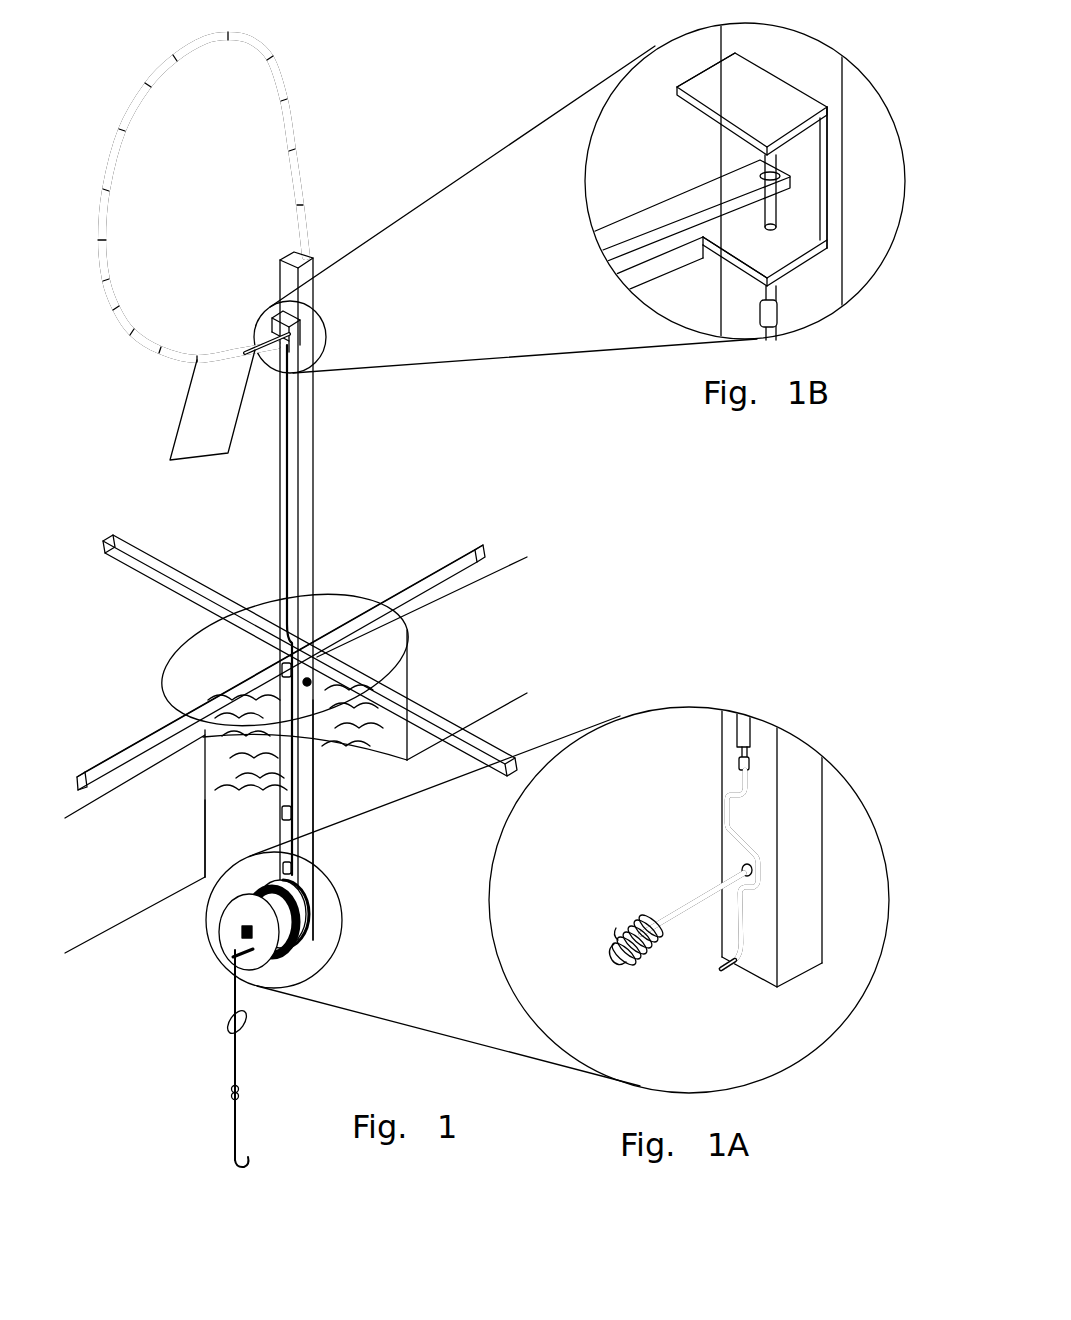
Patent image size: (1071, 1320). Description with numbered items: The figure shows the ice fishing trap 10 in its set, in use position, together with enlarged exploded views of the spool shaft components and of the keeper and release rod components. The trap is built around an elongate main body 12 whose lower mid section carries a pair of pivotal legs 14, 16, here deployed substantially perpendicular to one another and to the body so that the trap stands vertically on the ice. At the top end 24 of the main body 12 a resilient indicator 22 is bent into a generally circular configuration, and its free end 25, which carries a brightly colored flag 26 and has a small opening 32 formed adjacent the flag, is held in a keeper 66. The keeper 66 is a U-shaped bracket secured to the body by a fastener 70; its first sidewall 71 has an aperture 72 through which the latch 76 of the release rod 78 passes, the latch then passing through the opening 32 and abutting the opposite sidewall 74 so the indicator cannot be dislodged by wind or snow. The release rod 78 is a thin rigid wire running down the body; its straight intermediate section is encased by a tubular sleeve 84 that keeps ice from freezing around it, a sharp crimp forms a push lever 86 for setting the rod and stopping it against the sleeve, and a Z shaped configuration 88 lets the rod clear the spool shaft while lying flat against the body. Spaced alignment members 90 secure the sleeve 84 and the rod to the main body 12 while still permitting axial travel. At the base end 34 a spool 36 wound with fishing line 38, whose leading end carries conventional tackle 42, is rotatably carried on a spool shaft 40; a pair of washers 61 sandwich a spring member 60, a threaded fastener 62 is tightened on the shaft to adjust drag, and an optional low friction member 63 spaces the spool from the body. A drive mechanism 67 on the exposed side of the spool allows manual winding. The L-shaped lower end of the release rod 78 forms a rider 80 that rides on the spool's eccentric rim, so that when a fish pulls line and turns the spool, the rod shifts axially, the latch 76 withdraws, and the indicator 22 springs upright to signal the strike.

In FIG. 1, the ice fishing trap 10 is at (157, 516).
In FIG. 1, the main body 12 is at (306, 466).
In FIG. 1, the first leg 14 is at (127, 739).
In FIG. 1, the second leg 16 is at (160, 579).
In FIG. 1, the resilient indicator 22 is at (112, 224).
In FIG. 1, the top end 24 is at (314, 254).
In FIG. 1, the free end 25 is at (270, 330).
In FIG. 1B, the free end 25 is at (654, 228).
In FIG. 1, the flag 26 is at (206, 411).
In FIG. 1B, the opening 32 is at (743, 274).
In FIG. 1, the base end 34 is at (318, 846).
In FIG. 1A, the base end 34 is at (794, 970).
In FIG. 1, the spool 36 is at (241, 914).
In FIG. 1, the fishing line 38 is at (228, 1032).
In FIG. 1A, the spool shaft 40 is at (605, 961).
In FIG. 1, the fishing hardware or tackle 42 is at (229, 1091).
In FIG. 1A, the spring member 60 is at (636, 914).
In FIG. 1A, the washers 61 is at (637, 914).
In FIG. 1A, the threaded fastener 62 is at (606, 924).
In FIG. 1A, the low friction member 63 is at (737, 857).
In FIG. 1B, the keeper 66 is at (665, 88).
In FIG. 1, the drive mechanism 67 is at (226, 968).
In FIG. 1B, the fastener 70 is at (800, 183).
In FIG. 1B, the first sidewall 71 is at (740, 279).
In FIG. 1B, the aperture 72 is at (789, 222).
In FIG. 1B, the opposite sidewall 74 is at (720, 80).
In FIG. 1B, the latch 76 is at (756, 165).
In FIG. 1, the release rod 78 is at (283, 500).
In FIG. 1A, the release rod 78 is at (714, 805).
In FIG. 1A, the rider 80 is at (732, 974).
In FIG. 1, the tubular element or sleeve 84 is at (236, 825).
In FIG. 1A, the tubular element or sleeve 84 is at (731, 723).
In FIG. 1, the push lever 86 is at (262, 630).
In FIG. 1A, the Z shaped configuration 88 is at (777, 855).
In FIG. 1, the alignment members 90 is at (293, 670).
In FIG. 1B, the alignment members 90 is at (786, 318).
In FIG. 1A, the alignment members 90 is at (757, 762).